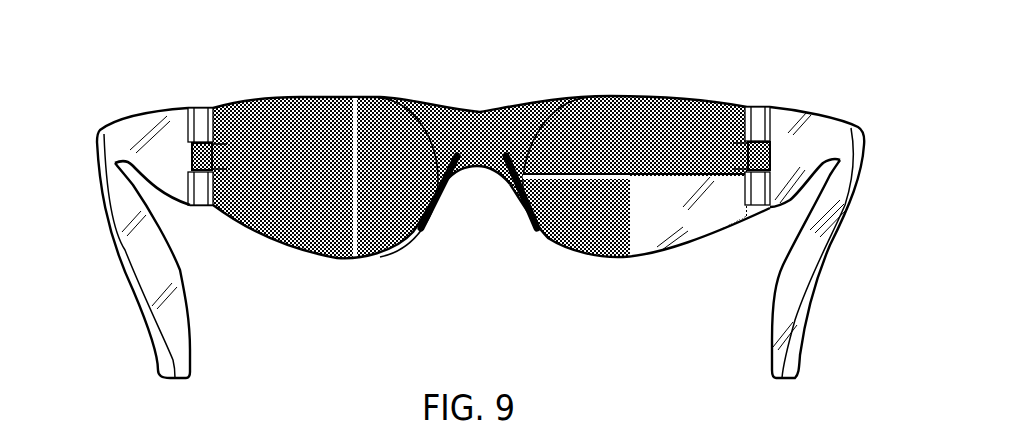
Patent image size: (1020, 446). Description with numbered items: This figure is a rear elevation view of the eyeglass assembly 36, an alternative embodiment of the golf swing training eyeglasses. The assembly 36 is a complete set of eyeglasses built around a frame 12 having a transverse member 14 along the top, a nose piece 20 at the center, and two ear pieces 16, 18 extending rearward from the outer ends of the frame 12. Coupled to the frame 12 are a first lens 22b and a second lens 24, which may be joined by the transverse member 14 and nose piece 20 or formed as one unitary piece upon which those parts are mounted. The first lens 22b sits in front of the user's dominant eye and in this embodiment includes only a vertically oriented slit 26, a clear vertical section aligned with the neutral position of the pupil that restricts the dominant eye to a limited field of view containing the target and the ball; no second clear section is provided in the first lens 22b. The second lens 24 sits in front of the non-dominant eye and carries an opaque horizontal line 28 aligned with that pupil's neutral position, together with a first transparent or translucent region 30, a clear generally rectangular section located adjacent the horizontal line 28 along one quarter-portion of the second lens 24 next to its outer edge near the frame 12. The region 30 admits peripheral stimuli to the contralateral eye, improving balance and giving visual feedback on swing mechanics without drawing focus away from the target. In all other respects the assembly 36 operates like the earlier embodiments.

The eyeglass assembly 36 is at (164, 69).
The frame 12 is at (325, 93).
The transverse member 14 is at (480, 108).
The vertically oriented slit 26 is at (356, 97).
The nose piece 20 is at (509, 187).
The first lens 22b is at (335, 260).
The second lens 24 is at (613, 260).
The first transparent or translucent region 30 is at (672, 218).
The opaque horizontal line 28 is at (718, 177).
The ear piece 16 is at (187, 328).
The ear piece 18 is at (816, 286).